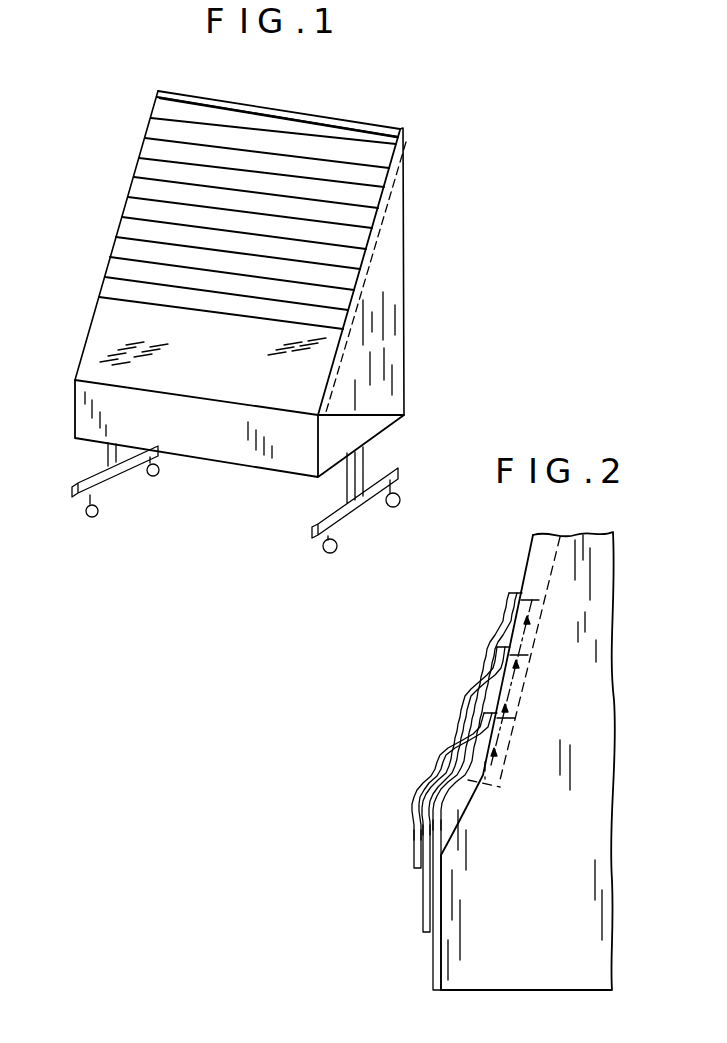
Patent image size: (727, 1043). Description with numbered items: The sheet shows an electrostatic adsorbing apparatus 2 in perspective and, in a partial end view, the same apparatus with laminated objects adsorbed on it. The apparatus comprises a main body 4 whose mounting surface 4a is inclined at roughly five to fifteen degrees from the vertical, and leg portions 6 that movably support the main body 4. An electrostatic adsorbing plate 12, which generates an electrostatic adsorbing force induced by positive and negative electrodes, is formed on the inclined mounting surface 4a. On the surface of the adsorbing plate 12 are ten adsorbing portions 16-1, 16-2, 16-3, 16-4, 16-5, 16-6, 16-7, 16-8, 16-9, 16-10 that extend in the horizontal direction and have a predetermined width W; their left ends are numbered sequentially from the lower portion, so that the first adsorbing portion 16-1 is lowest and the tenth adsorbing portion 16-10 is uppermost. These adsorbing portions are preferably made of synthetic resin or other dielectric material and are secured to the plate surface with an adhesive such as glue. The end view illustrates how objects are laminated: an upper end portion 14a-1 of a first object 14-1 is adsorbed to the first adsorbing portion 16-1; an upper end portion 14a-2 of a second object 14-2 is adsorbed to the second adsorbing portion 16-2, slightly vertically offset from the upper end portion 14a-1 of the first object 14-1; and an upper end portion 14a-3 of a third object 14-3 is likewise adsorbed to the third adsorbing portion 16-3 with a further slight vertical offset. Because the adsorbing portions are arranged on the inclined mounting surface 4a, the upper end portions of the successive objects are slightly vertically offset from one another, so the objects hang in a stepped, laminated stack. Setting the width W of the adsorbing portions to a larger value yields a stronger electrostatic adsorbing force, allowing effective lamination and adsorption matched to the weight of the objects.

In FIG. 1, the electrostatic adsorbing apparatus 2 is at (446, 93).
In FIG. 1, the main body 4 is at (93, 357).
In FIG. 1, the mounting surface 4a is at (122, 326).
In FIG. 1, the leg portions 6 is at (107, 481).
In FIG. 1, the electrostatic adsorbing plate 12 is at (353, 333).
In FIG. 1, the first adsorbing portion 16-1 is at (345, 320).
In FIG. 2, the first adsorbing portion 16-1 is at (500, 740).
In FIG. 1, the second adsorbing portion 16-2 is at (351, 300).
In FIG. 2, the second adsorbing portion 16-2 is at (515, 700).
In FIG. 1, the third adsorbing portion 16-3 is at (357, 280).
In FIG. 2, the third adsorbing portion 16-3 is at (528, 652).
In FIG. 1, the fourth adsorbing portion 16-4 is at (363, 259).
In FIG. 1, the fifth adsorbing portion 16-5 is at (369, 238).
In FIG. 1, the sixth adsorbing portion 16-6 is at (375, 218).
In FIG. 1, the seventh adsorbing portion 16-7 is at (381, 197).
In FIG. 1, the eighth adsorbing portion 16-8 is at (386, 177).
In FIG. 1, the ninth adsorbing portion 16-9 is at (392, 156).
In FIG. 1, the tenth adsorbing portion 16-10 is at (397, 141).
In FIG. 2, the first object 14-1 is at (434, 967).
In FIG. 2, the second object 14-2 is at (424, 906).
In FIG. 2, the third object 14-3 is at (417, 857).
In FIG. 2, the upper end portion of first object 14a-1 is at (472, 733).
In FIG. 2, the upper end portion of second object 14a-2 is at (488, 675).
In FIG. 2, the upper end portion of third object 14a-3 is at (503, 622).
In FIG. 2, the width W is at (530, 626).